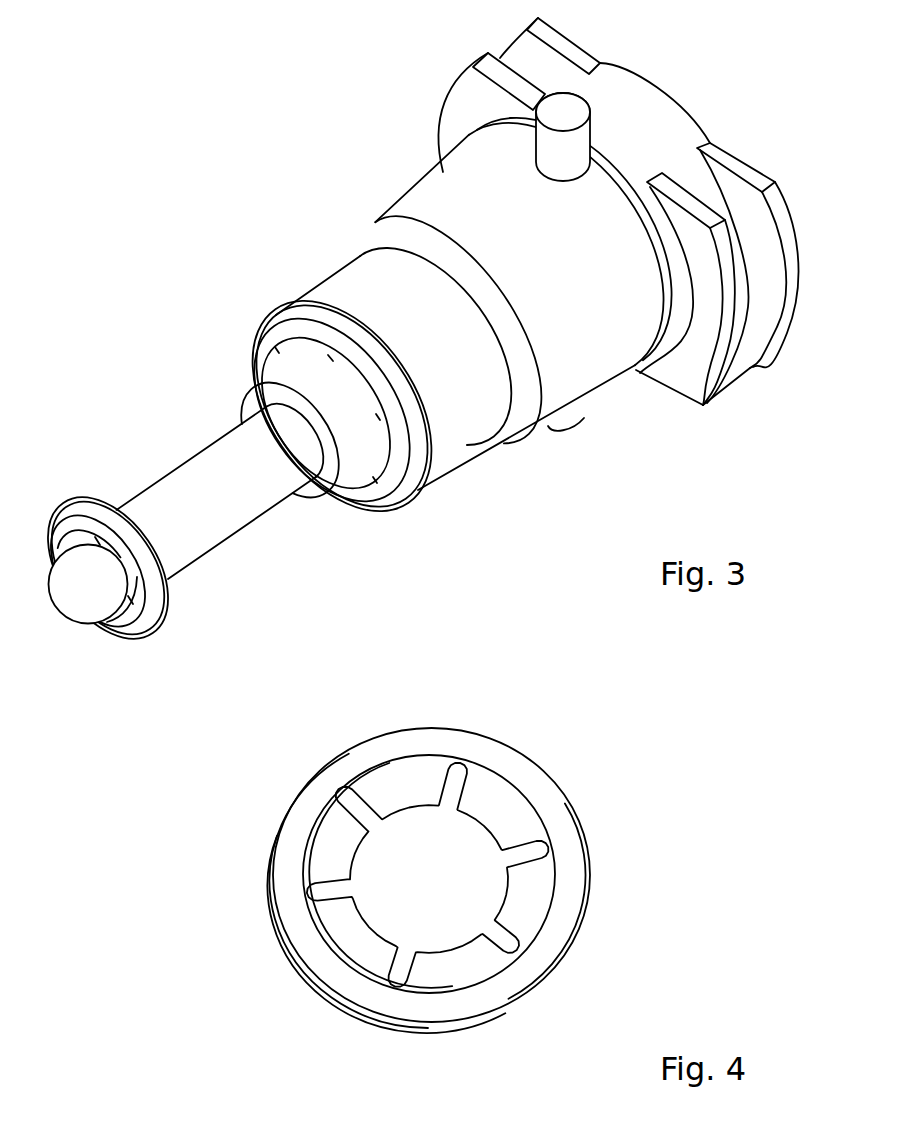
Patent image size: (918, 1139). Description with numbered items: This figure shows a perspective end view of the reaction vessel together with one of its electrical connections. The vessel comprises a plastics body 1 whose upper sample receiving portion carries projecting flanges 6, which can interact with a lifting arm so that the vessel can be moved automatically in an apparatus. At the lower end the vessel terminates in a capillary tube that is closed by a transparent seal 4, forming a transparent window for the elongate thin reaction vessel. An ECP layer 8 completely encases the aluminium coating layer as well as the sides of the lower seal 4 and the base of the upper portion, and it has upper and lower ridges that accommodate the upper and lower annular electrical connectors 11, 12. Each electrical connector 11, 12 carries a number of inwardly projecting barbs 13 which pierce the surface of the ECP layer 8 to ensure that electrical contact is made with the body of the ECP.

In FIG. 3, the plastics body 1 is at (600, 447).
In FIG. 3, the transparent seal 4 is at (78, 590).
In FIG. 3, the projecting flanges 6 is at (728, 162).
In FIG. 3, the ECP layer 8 is at (193, 473).
In FIG. 3, the upper annular electrical connector 11 is at (413, 483).
In FIG. 4, the upper annular electrical connector 11 is at (583, 933).
In FIG. 3, the lower annular electrical connector 12 is at (152, 594).
In FIG. 4, the inwardly projecting barbs 13 is at (493, 823).